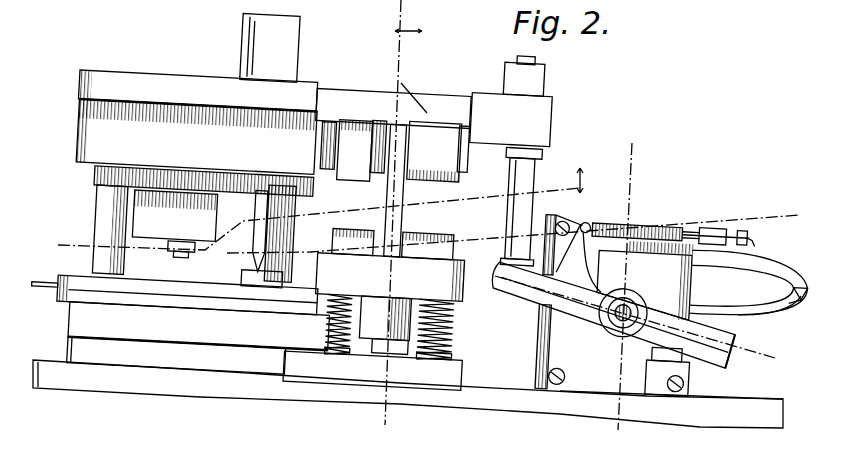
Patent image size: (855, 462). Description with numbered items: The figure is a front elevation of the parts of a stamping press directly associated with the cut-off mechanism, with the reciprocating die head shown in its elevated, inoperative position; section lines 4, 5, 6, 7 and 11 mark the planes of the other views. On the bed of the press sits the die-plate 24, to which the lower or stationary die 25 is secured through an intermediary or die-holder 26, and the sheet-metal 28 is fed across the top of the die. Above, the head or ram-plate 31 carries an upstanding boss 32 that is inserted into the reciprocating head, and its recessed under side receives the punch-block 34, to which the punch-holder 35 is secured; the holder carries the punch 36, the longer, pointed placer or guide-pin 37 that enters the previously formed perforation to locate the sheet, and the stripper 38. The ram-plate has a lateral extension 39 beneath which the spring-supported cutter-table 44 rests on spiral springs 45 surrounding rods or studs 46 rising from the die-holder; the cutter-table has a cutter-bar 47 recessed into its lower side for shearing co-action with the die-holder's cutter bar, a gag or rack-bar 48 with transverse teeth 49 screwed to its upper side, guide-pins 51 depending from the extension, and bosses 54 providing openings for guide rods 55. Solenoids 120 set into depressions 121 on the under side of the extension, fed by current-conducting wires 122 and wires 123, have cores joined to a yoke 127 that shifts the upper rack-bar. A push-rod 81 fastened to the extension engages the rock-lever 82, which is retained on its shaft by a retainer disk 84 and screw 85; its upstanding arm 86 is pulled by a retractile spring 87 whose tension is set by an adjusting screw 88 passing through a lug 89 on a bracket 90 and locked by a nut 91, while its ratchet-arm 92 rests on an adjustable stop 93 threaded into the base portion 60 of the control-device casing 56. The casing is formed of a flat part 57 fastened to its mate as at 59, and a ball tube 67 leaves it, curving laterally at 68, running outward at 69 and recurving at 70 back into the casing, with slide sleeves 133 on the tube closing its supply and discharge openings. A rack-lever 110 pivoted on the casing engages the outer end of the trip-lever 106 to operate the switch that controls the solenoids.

The section line 4- 4 is at (507, 277).
The section line 5- 5 is at (510, 241).
The section line 6- 6 is at (598, 184).
The section line 7- 7 is at (399, 225).
The section line 11- 11 is at (625, 287).
The die-plate 24 is at (285, 385).
The lower or stationary die 25 is at (153, 311).
The intermediary or die-holder 26 is at (188, 359).
The sheet-metal 28 is at (50, 290).
The head or ram-plate 31 is at (305, 90).
The upstanding boss 32 is at (262, 41).
The die or punch-block 34 is at (95, 132).
The die or punch-holder 35 is at (147, 208).
The punch 36 is at (178, 248).
The placer or guide-pin 37 is at (263, 230).
The stripper 38 is at (174, 215).
The lateral extension 39 is at (448, 97).
The cutter-table 44 is at (340, 268).
The spiral springs 45 is at (330, 345).
The rods or studs 46 is at (342, 342).
The cutter-bar 47 is at (390, 277).
The gag or rack-bar 48 is at (422, 241).
The teeth 49 is at (410, 232).
The guide-pins 51 is at (393, 207).
The downwardly-extending bosses 54 is at (414, 333).
The guide rods 55 is at (400, 350).
The casing 56 is at (680, 283).
The casing part 57 is at (550, 345).
The screw fastening 59 is at (562, 220).
The base portions 60 is at (671, 403).
The ball tube 67 is at (783, 271).
The laterally curved portion 68 is at (776, 312).
The laterally directed portion 69 is at (800, 308).
The recurved portion 70 is at (728, 306).
The push-rod 81 is at (512, 232).
The rock-lever 82 is at (546, 300).
The retainer disk 84 is at (647, 318).
The screw 85 is at (611, 305).
The upstanding arm 86 is at (582, 253).
The retractile spring 87 is at (642, 218).
The adjusting screw 88 is at (716, 226).
The lug 89 is at (741, 228).
The bracket 90 is at (670, 217).
The nut 91 is at (750, 236).
The ratchet-arm 92 is at (724, 362).
The adjustable stop 93 is at (657, 351).
The trip-lever 106 is at (552, 274).
The rack-lever 110 is at (542, 242).
The solenoids 120 is at (377, 158).
The depressions 121 is at (473, 133).
The current-conducting wires 122 is at (316, 133).
The wires 123 is at (340, 112).
The yoke 127 is at (468, 143).
The slide sleeves 133 is at (756, 341).